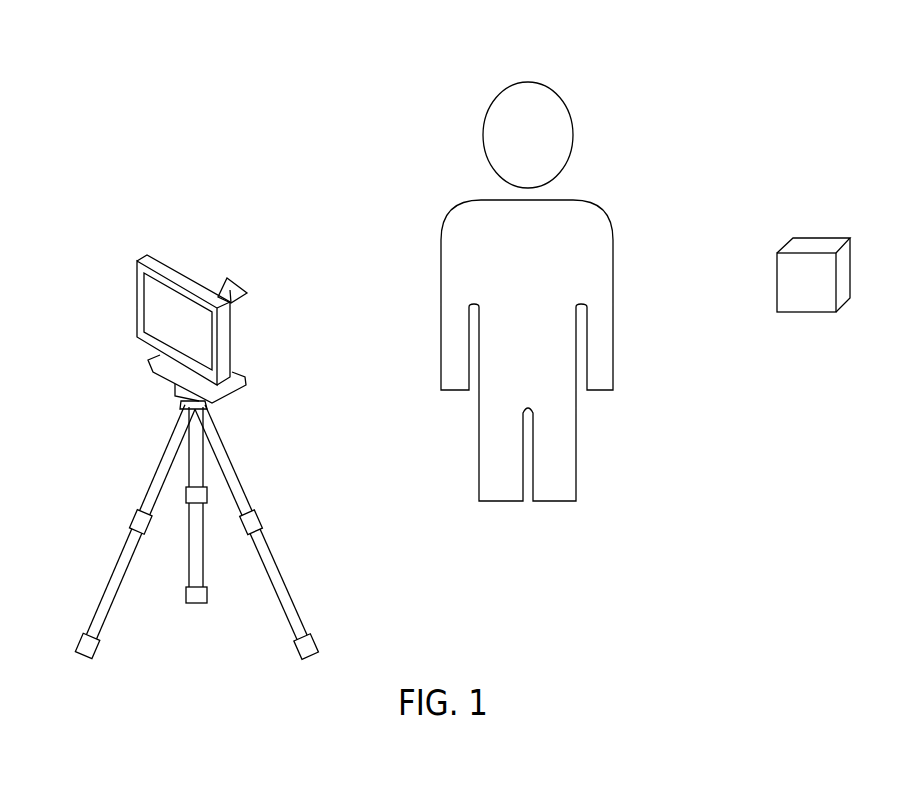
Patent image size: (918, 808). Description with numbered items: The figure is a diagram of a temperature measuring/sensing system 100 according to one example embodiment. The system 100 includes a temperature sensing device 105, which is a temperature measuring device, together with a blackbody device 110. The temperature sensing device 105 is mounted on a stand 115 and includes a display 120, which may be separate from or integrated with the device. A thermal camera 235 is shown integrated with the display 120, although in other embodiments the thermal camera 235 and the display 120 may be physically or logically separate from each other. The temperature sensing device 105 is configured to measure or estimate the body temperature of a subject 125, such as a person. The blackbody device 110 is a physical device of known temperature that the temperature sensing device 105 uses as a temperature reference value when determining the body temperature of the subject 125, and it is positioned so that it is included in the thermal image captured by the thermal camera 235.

The temperature measuring/sensing system 100 is at (118, 63).
The temperature sensing device 105 is at (162, 267).
The blackbody device 110 is at (777, 286).
The stand 115 is at (108, 582).
The display 120 is at (152, 303).
The subject 125 is at (483, 134).
The thermal camera 235 is at (260, 320).